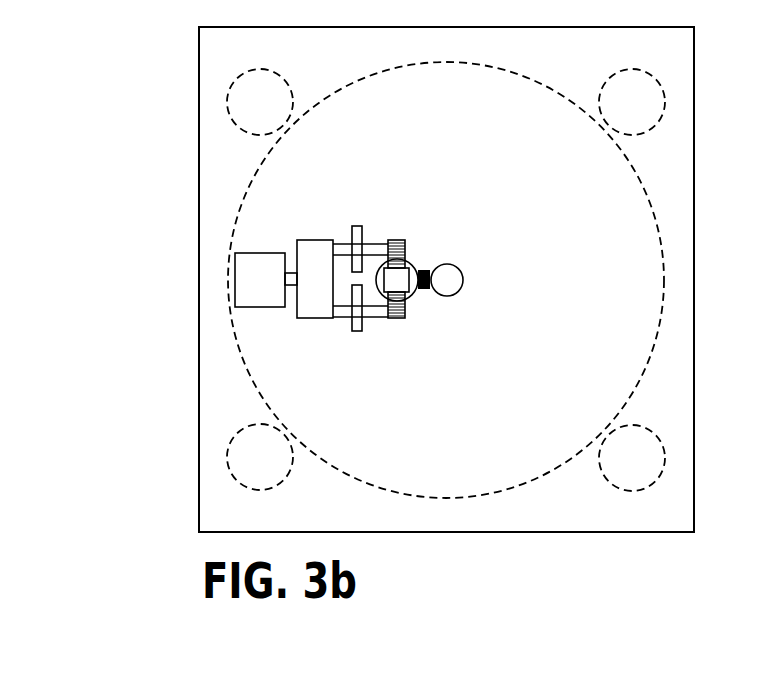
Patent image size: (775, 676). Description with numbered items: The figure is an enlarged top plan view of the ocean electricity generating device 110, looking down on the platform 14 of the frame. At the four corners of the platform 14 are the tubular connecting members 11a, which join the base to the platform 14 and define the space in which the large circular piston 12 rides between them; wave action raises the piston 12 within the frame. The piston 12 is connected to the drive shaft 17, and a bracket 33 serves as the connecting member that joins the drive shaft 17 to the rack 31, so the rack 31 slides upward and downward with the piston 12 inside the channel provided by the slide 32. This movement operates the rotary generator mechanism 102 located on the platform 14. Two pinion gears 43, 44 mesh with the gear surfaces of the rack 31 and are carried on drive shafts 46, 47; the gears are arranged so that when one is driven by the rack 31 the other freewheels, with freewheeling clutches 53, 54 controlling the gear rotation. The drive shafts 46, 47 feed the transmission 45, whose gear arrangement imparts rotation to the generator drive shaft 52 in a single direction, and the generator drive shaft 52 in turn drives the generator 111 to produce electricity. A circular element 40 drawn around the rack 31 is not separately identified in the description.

The connecting members 11a is at (255, 102).
The piston 12 is at (568, 463).
The platform 14 is at (198, 323).
The drive shaft 17 is at (450, 278).
The rack 31 is at (402, 281).
The slide 32 is at (393, 280).
The bracket 33 is at (427, 270).
The rotary coupling 40 is at (408, 262).
The pinion gear 43 is at (395, 240).
The pinion gear 44 is at (397, 318).
The transmission 45 is at (315, 255).
The drive shaft 46 is at (377, 254).
The drive shaft 47 is at (377, 307).
The generator drive shaft 52 is at (290, 285).
The freewheeling clutch 53 is at (356, 331).
The freewheeling clutch 54 is at (356, 226).
The generator mechanism 102 is at (323, 172).
The ocean electricity generating device 110 is at (165, 237).
The generator 111 is at (258, 263).